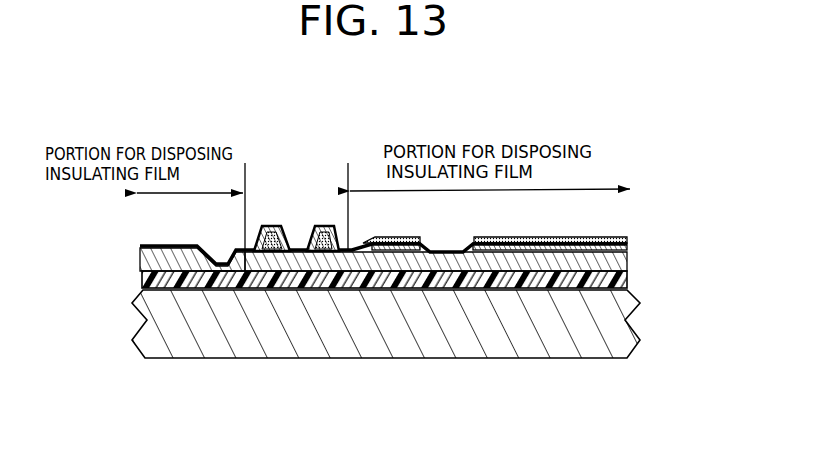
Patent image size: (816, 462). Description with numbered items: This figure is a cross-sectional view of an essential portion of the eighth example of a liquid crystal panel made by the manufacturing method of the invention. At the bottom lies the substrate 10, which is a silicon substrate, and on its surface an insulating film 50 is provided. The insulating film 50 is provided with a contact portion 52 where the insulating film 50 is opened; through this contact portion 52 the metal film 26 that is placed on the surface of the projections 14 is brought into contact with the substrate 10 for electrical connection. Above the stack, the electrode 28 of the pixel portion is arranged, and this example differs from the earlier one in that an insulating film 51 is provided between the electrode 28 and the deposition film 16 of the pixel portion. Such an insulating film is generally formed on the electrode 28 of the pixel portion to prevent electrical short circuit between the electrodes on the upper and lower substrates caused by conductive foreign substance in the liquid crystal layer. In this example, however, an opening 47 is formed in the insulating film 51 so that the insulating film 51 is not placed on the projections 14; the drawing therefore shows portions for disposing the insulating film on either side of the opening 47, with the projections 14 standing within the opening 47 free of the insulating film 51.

The substrate 10 is at (617, 342).
The projections 14 is at (331, 286).
The deposition film 16 is at (616, 233).
The metal film 26 is at (147, 264).
The electrode 28 is at (617, 263).
The opening 47 is at (346, 192).
The insulating film 50 is at (145, 284).
The insulating film 51 is at (160, 245).
The contact portion 52 is at (216, 289).